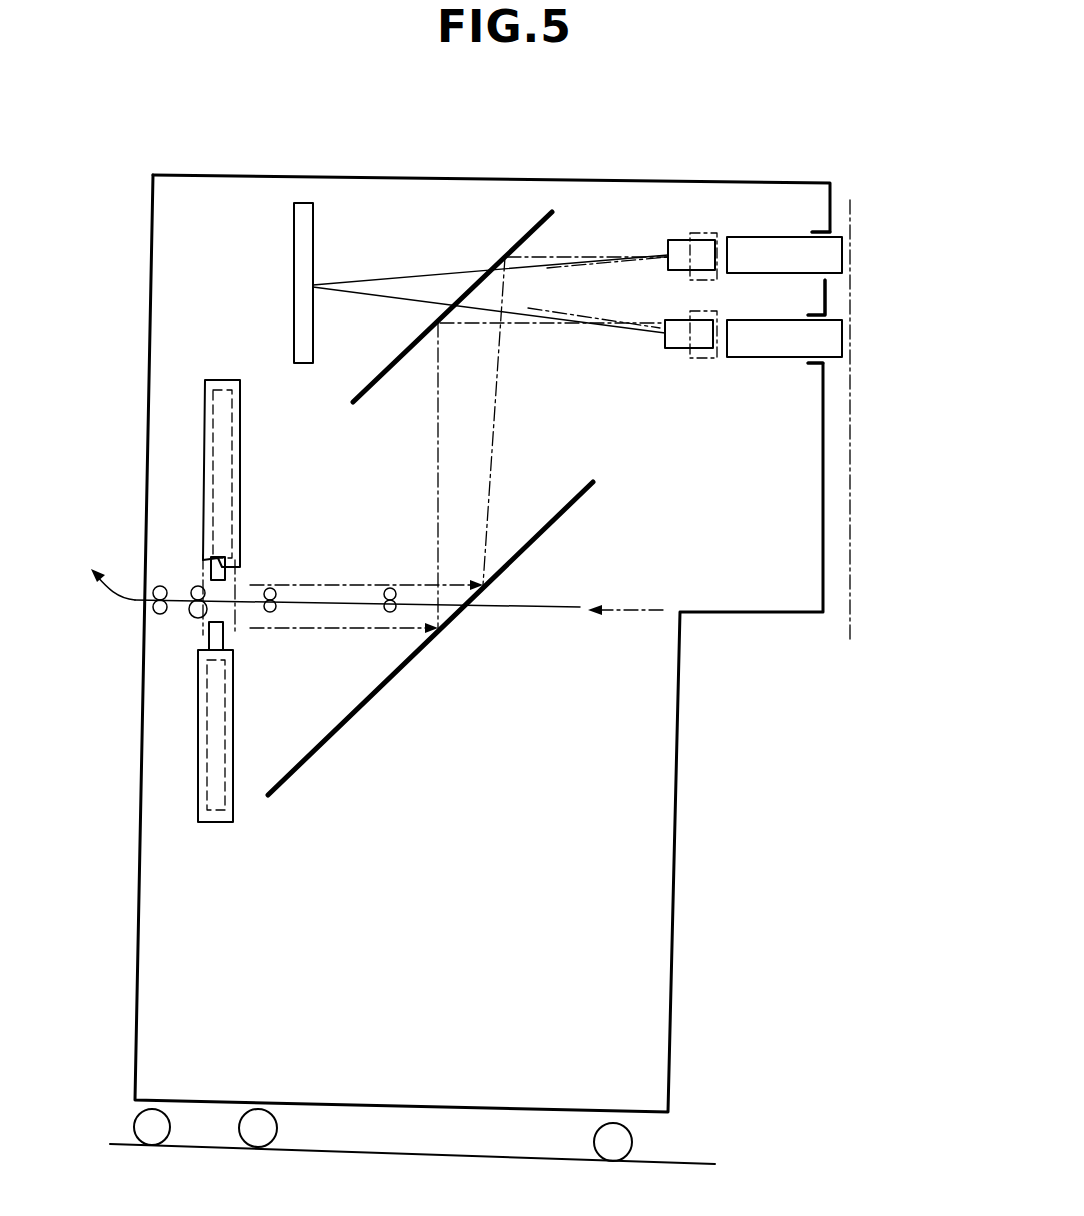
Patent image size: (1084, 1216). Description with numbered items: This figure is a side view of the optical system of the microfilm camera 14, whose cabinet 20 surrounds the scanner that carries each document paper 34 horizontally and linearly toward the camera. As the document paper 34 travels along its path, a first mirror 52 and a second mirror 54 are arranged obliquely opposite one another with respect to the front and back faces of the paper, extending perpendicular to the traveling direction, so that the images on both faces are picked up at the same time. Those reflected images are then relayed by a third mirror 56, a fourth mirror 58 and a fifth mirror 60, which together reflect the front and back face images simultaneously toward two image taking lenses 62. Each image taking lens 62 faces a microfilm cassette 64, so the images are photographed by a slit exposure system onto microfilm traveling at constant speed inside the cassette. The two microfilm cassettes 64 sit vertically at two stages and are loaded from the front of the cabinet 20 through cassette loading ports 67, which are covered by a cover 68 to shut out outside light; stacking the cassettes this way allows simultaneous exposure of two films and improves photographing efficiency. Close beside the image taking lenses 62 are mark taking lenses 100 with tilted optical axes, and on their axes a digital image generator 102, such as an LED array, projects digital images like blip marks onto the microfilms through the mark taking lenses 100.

The microfilm camera 14 is at (722, 832).
The cabinet 20 is at (680, 779).
The document paper 34 is at (522, 604).
The first mirror 52 is at (206, 558).
The second mirror 54 is at (209, 636).
The third mirror 56 is at (198, 755).
The fourth mirror 58 is at (380, 698).
The fifth mirror 60 is at (365, 392).
The image taking lens 62 is at (673, 240).
The microfilm cassette 64 is at (783, 237).
The cassette loading port 67 is at (833, 240).
The cover 68 is at (850, 590).
The mark taking lens 100 is at (702, 233).
The digital image generator 102 is at (294, 283).